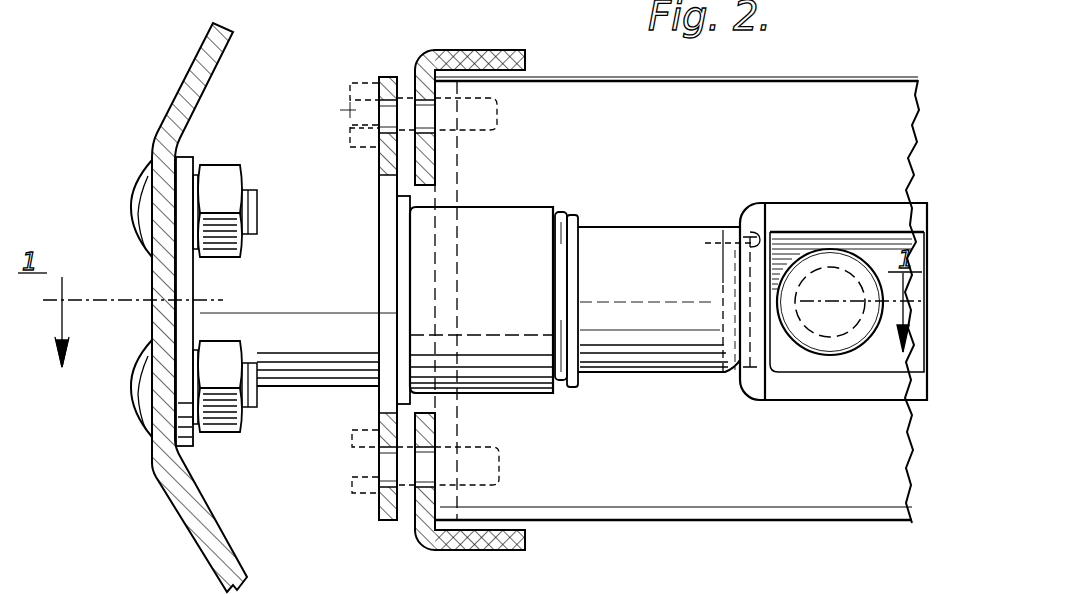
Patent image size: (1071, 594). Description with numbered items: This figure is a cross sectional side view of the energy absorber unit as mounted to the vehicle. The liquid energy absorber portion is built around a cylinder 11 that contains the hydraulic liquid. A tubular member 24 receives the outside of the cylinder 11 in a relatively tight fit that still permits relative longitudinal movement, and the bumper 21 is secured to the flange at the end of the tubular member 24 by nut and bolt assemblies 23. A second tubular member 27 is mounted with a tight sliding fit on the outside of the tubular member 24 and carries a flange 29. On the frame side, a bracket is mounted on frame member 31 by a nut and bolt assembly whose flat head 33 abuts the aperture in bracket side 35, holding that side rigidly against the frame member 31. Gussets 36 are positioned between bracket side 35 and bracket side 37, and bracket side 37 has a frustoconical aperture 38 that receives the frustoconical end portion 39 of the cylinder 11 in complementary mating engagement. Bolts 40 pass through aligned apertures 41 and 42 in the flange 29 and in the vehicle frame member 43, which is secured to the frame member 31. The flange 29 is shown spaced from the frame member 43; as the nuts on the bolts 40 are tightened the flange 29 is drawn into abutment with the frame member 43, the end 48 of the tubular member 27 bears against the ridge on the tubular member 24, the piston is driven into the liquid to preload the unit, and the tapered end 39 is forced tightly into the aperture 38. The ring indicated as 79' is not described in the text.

The cylinder 11 is at (658, 373).
The bumper 21 is at (172, 98).
The nut and bolt assemblies 23 is at (138, 185).
The tubular member 24 is at (303, 360).
The second tubular member 27 is at (510, 392).
The flange 29 is at (383, 197).
The frame member 31 is at (882, 100).
The flat head 33 is at (827, 343).
The bracket side 35 is at (878, 247).
The gussets 36 is at (830, 210).
The bracket side 37 is at (737, 223).
The frustoconical aperture 38 is at (713, 243).
The frustoconical end portion 39 is at (733, 282).
The bolts 40 is at (333, 112).
The aperture 41 is at (378, 127).
The aperture 42 is at (425, 128).
The vehicle frame member 43 is at (443, 50).
The end of tubular member 48 is at (570, 190).
The spacer ring 79' is at (598, 301).